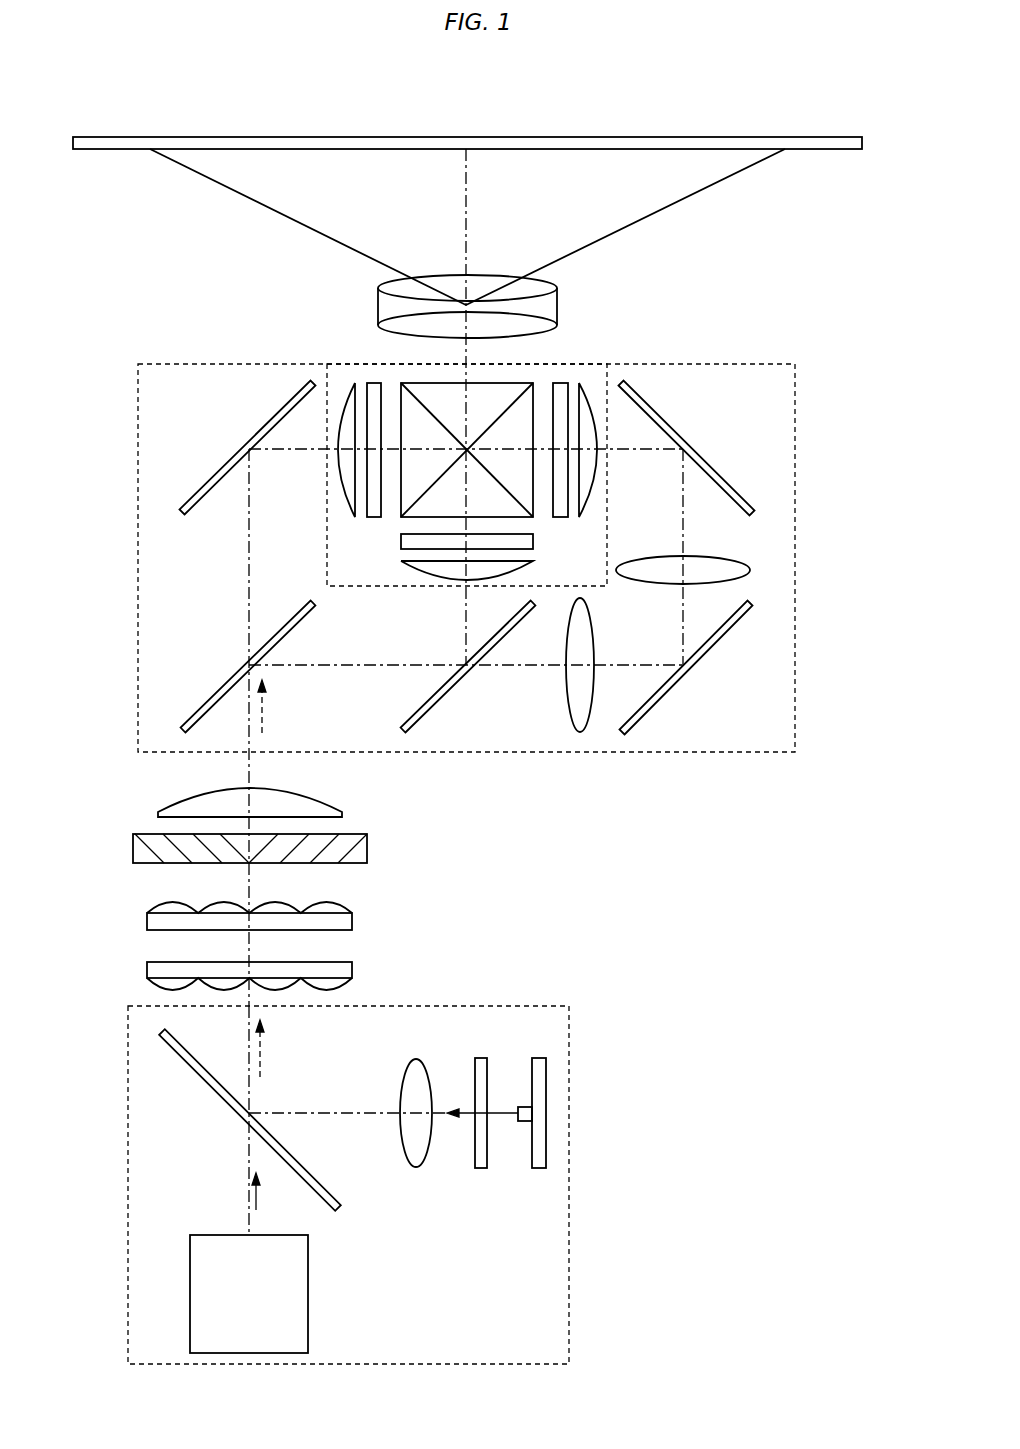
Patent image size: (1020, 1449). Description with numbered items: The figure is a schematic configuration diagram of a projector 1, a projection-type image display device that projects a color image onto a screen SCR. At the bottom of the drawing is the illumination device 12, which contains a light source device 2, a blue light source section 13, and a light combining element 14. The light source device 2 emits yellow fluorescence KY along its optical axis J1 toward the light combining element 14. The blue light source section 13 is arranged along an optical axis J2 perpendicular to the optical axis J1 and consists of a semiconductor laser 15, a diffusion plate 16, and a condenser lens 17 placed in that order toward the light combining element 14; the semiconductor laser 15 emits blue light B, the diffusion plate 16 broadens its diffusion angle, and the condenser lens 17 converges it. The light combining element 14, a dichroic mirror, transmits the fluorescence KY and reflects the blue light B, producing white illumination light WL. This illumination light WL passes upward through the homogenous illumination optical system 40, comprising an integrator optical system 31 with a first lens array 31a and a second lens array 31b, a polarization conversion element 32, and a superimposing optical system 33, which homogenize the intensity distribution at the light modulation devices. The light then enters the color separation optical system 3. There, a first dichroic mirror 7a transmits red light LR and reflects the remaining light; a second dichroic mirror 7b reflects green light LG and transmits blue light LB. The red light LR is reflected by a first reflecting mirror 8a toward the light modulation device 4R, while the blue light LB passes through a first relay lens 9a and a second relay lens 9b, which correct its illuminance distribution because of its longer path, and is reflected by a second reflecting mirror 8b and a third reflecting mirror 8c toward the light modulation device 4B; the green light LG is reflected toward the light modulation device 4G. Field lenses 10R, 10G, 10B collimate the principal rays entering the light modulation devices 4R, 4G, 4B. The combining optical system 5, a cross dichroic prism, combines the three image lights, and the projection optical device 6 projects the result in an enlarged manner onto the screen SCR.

The projector 1 is at (822, 235).
The screen SCR is at (823, 143).
The projection optical device 6 is at (448, 283).
The color separation optical system 3 is at (138, 492).
The combining optical system 5 is at (490, 393).
The light modulation device 4R is at (375, 383).
The light modulation device 4G is at (407, 543).
The light modulation device 4B is at (563, 383).
The field lens 10R is at (352, 383).
The field lens 10G is at (407, 567).
The field lens 10B is at (583, 383).
The first reflecting mirror 8a is at (227, 467).
The second reflecting mirror 8b is at (710, 652).
The third reflecting mirror 8c is at (712, 467).
The first dichroic mirror 7a is at (212, 695).
The second dichroic mirror 7b is at (443, 695).
The first relay lens 9a is at (565, 683).
The second relay lens 9b is at (710, 557).
The red light LR is at (249, 578).
The green light LG is at (466, 622).
The blue light LB is at (683, 623).
The illumination light WL is at (262, 713).
The homogenous illumination optical system 40 is at (344, 891).
The superimposing optical system 33 is at (333, 793).
The polarization conversion element 32 is at (367, 849).
The integrator optical system 31 is at (319, 948).
The first lens array 31a is at (293, 976).
The second lens array 31b is at (352, 922).
The illumination device 12 is at (569, 1165).
The light combining element 14 is at (220, 1093).
The optical axis J1 is at (249, 1167).
The optical axis J2 is at (325, 1113).
The fluorescence KY is at (258, 1193).
The light source device 2 is at (308, 1280).
The blue light source section 13 is at (473, 1164).
The semiconductor laser 15 is at (525, 1144).
The diffusion plate 16 is at (480, 1167).
The condenser lens 17 is at (423, 1155).
The blue light B is at (502, 1112).